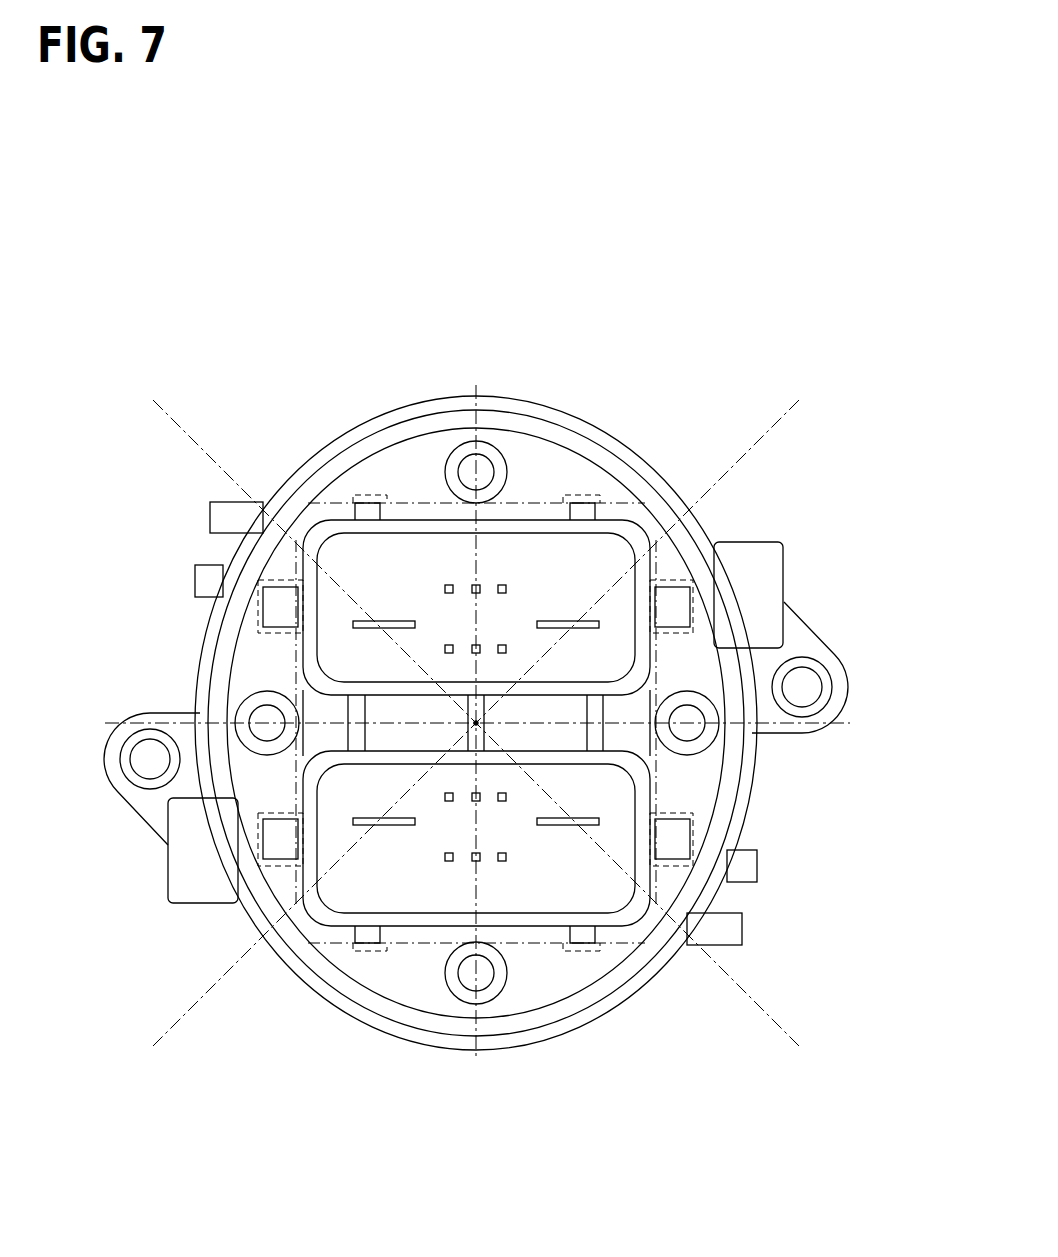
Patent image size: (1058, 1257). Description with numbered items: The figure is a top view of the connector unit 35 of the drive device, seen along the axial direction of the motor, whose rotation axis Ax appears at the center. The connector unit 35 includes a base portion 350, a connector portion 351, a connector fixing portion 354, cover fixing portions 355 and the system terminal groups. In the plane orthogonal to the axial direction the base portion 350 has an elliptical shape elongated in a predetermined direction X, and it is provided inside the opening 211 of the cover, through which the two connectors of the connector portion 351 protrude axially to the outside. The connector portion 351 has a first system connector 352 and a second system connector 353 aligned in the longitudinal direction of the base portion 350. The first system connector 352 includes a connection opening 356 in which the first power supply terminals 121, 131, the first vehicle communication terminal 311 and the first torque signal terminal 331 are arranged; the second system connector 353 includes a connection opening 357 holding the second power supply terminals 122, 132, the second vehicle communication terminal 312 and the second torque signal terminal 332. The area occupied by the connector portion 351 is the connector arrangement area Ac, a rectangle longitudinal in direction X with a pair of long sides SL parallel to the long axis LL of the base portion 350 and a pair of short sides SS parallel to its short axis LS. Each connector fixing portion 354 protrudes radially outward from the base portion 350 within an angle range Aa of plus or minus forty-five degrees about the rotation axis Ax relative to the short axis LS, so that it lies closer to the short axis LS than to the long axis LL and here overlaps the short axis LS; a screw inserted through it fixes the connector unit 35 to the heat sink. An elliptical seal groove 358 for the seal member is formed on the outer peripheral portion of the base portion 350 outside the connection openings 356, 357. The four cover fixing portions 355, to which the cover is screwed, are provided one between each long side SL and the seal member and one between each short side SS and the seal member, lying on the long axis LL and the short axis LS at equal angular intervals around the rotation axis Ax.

The connector unit 35 is at (463, 396).
The base portion 350 is at (312, 470).
The seal groove 358 is at (636, 478).
The cover fixing portion 355 is at (478, 452).
The opening 211 is at (624, 500).
The first power supply terminal 121 is at (388, 618).
The second power supply terminal 122 is at (567, 830).
The first power supply terminal 131 is at (560, 618).
The second power supply terminal 132 is at (362, 936).
The first torque signal terminal 331 is at (448, 583).
The first vehicle communication terminal 311 is at (503, 643).
The second torque signal terminal 332 is at (503, 803).
The second vehicle communication terminal 312 is at (450, 863).
The connector fixing portion 354 is at (119, 755).
The first system connector 352 is at (185, 865).
The second system connector 353 is at (228, 895).
The connector portion 351 is at (117, 857).
The connection opening 356 is at (786, 552).
The connection opening 357 is at (307, 900).
The short side SS is at (580, 1084).
The long side SL is at (300, 700).
The short axis LS is at (818, 738).
The long axis LL is at (480, 1030).
The axis Ax is at (482, 727).
The connector arrangement area Ac is at (336, 950).
The angle range Aa is at (153, 1046).
The predetermined direction X is at (708, 1013).